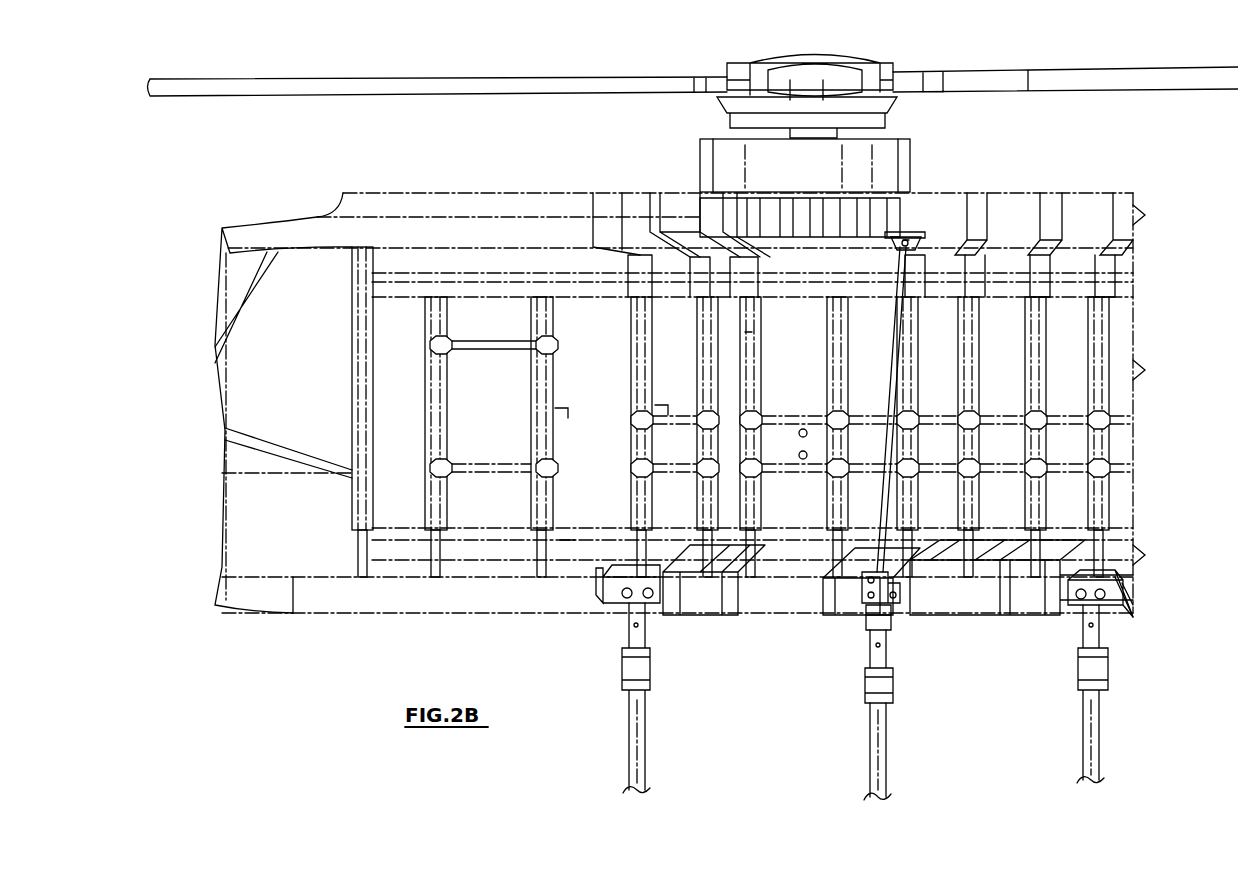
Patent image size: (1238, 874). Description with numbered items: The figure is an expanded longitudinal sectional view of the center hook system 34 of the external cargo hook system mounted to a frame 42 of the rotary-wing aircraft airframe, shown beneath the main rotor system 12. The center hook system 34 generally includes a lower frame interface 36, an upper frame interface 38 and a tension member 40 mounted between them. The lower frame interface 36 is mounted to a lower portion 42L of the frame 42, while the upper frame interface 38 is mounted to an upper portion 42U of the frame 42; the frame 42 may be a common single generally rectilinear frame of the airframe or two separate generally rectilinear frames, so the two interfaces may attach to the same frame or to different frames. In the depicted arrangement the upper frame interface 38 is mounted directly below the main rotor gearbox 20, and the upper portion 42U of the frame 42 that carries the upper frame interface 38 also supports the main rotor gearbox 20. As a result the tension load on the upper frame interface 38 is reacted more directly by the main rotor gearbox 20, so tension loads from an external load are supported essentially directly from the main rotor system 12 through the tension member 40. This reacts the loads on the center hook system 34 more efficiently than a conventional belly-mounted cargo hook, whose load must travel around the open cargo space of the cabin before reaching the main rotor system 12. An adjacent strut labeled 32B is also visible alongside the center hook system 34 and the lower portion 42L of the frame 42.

The main rotor system 12 is at (880, 50).
The main rotor gearbox 20 is at (825, 176).
The upper portion of the frame 42U is at (899, 212).
The upper frame interface 38 is at (908, 242).
The tension member 40 is at (882, 404).
The frame 42 is at (915, 376).
The lower portion of the frame 42L is at (957, 616).
The lower frame interface 36 is at (905, 625).
The center hook system 34 is at (890, 742).
The landing gear strut 32B is at (1110, 733).